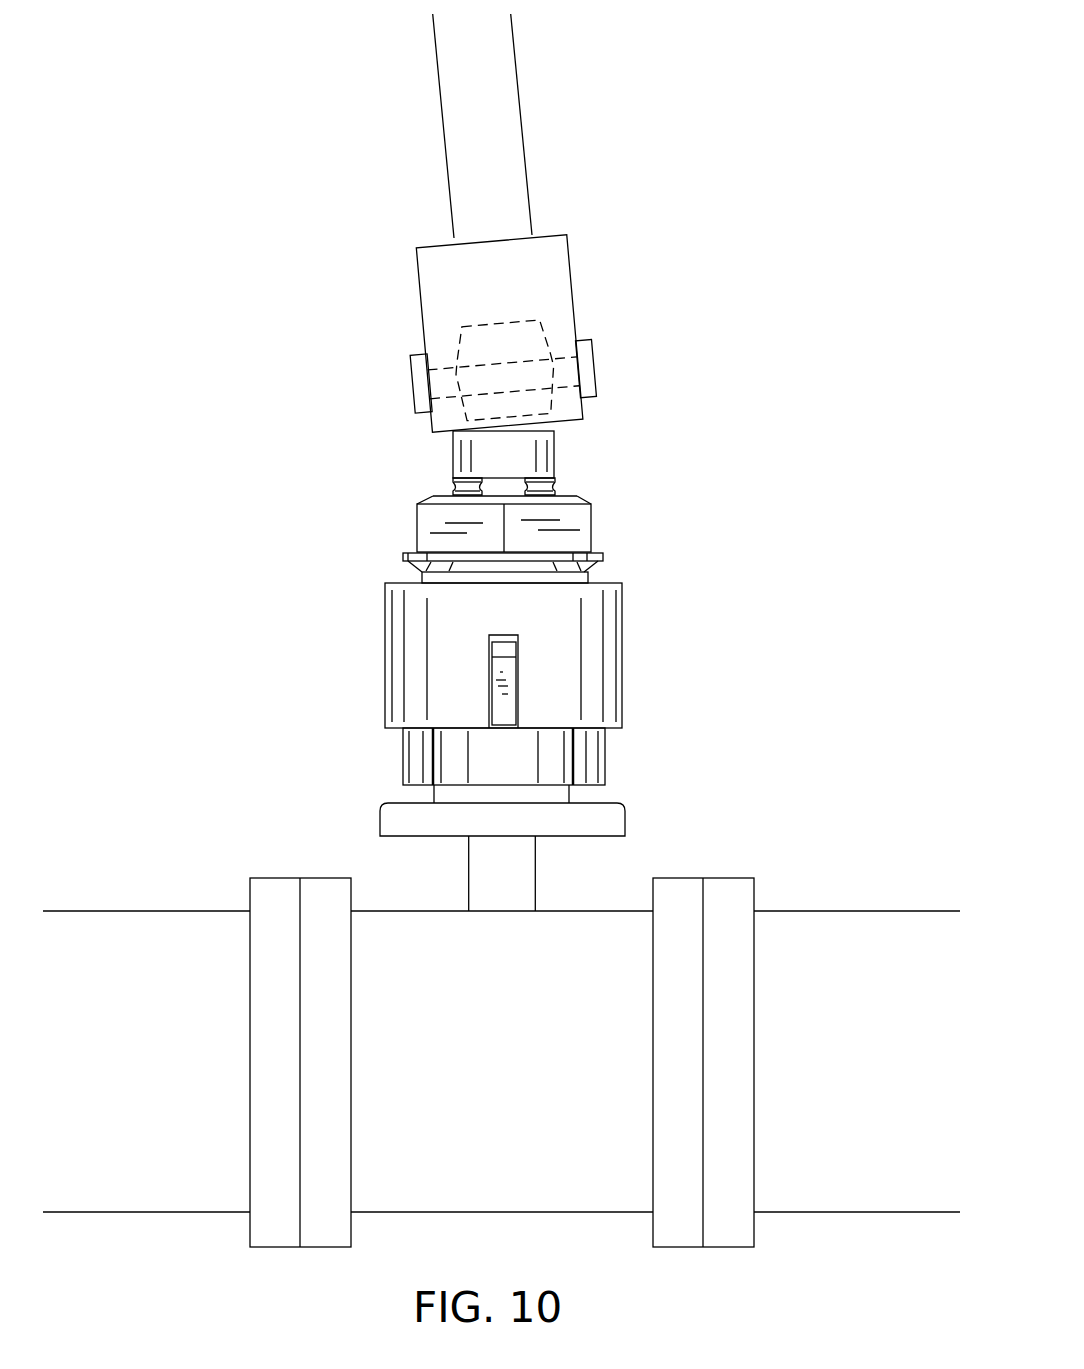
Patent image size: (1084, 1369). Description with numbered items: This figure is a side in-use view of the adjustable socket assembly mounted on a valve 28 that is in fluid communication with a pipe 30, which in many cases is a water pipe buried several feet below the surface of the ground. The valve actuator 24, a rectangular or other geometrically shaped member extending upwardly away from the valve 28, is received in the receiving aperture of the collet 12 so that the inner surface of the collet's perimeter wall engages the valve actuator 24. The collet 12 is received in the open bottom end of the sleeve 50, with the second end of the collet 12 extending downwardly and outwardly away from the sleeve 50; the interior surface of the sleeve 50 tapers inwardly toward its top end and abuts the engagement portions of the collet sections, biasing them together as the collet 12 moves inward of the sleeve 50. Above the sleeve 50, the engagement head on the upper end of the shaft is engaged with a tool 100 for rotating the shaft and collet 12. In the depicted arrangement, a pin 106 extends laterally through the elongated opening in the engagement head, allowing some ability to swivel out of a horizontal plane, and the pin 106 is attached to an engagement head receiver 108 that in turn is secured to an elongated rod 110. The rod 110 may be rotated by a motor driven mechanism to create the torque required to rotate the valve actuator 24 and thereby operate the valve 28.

The collet 12 is at (570, 671).
The valve actuator 24 is at (570, 792).
The valve 28 is at (550, 1200).
The pipe 30 is at (867, 915).
The sleeve 50 is at (662, 584).
The tool 100 is at (519, 224).
The pin 106 is at (503, 377).
The engagement head receiver 108 is at (578, 308).
The elongated rod 110 is at (443, 135).